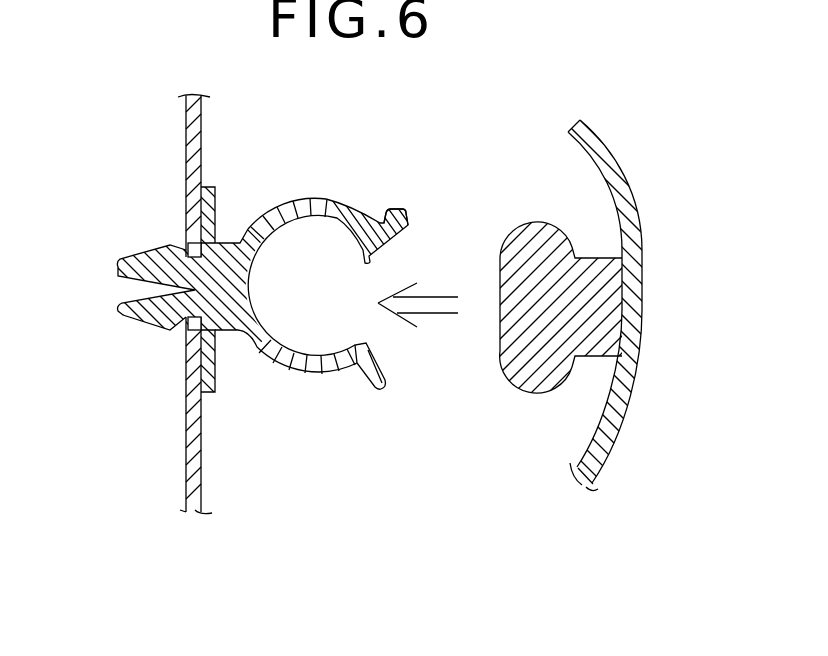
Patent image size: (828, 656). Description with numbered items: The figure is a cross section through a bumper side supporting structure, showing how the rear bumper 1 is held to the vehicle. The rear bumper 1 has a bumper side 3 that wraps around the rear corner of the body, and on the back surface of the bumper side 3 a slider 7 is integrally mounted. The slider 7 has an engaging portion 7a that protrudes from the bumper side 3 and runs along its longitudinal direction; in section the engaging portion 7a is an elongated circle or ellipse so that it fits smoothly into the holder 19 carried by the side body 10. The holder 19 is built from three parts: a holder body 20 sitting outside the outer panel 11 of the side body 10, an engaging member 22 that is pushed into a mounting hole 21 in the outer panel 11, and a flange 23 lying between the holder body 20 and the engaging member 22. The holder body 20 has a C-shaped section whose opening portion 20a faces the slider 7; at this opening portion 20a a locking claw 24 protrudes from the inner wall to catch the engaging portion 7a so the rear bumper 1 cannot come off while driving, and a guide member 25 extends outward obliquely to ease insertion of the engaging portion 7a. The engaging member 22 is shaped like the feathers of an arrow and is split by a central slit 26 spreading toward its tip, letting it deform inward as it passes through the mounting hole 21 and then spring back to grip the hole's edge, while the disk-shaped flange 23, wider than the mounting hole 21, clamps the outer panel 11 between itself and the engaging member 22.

The rear bumper 1 is at (607, 462).
The bumper side 3 is at (622, 170).
The slider 7 is at (578, 255).
The engaging portion 7a is at (520, 388).
The side body 10 is at (204, 477).
The outer panel 11 is at (201, 118).
The holder 19 is at (333, 188).
The holder body 20 is at (309, 378).
The opening portion 20a is at (358, 308).
The mounting hole 21 is at (186, 245).
The engaging member 22 is at (150, 322).
The flange 23 is at (214, 204).
The locking claw 24 is at (362, 258).
The guide member 25 is at (408, 222).
The slit 26 is at (132, 287).